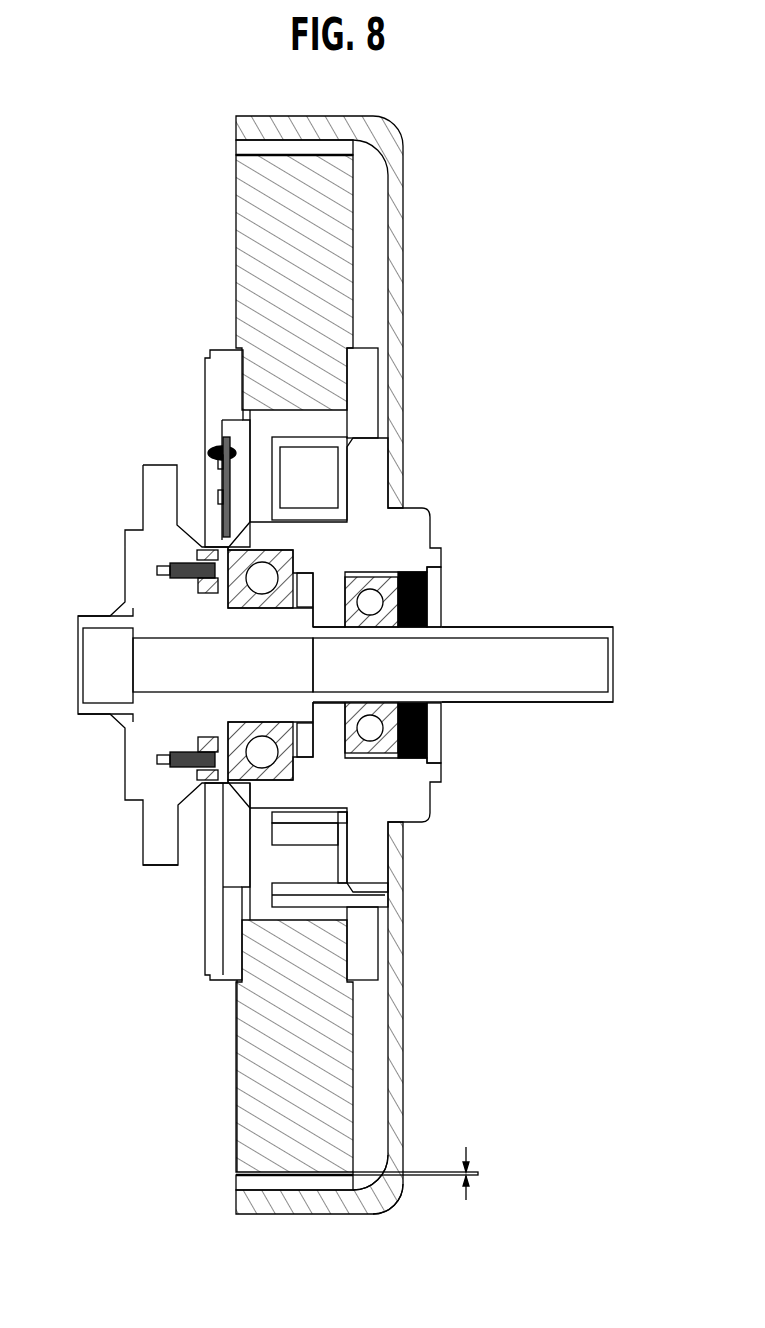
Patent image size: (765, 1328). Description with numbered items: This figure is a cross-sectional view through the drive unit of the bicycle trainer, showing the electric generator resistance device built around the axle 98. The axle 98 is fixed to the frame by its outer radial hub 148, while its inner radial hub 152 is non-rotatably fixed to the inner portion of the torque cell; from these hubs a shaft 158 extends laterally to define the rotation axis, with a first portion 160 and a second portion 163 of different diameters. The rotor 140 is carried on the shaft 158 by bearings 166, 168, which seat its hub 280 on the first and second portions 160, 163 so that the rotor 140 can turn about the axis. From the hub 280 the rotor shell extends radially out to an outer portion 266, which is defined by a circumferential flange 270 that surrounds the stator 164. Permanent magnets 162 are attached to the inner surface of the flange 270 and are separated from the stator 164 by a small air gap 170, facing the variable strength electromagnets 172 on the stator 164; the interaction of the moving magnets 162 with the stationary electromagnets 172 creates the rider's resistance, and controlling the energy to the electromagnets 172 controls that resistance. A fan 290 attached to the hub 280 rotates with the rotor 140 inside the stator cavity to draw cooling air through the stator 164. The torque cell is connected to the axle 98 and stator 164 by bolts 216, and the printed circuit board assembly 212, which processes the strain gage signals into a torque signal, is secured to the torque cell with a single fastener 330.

The axle 98 is at (585, 627).
The rotor 140 is at (404, 964).
The outer radial hub 148 is at (162, 862).
The inner radial hub 152 is at (192, 792).
The shaft 158 is at (482, 627).
The first portion 160 is at (327, 613).
The permanent magnet 162 is at (288, 1187).
The second portion 163 is at (533, 627).
The stator 164 is at (216, 1063).
The bearing 166 is at (230, 728).
The bearing 168 is at (383, 755).
The air gap 170 is at (478, 1173).
The electromagnet 172 is at (340, 1063).
The printed circuit board assembly 212 is at (220, 494).
The bolt 216 is at (197, 549).
The outer portion 266 is at (344, 1205).
The circumferential flange 270 is at (370, 1172).
The hub 280 is at (427, 545).
The fan 290 is at (333, 890).
The fastener 330 is at (238, 448).